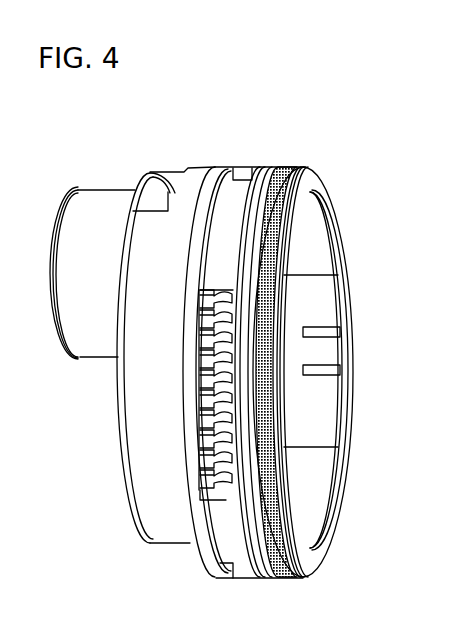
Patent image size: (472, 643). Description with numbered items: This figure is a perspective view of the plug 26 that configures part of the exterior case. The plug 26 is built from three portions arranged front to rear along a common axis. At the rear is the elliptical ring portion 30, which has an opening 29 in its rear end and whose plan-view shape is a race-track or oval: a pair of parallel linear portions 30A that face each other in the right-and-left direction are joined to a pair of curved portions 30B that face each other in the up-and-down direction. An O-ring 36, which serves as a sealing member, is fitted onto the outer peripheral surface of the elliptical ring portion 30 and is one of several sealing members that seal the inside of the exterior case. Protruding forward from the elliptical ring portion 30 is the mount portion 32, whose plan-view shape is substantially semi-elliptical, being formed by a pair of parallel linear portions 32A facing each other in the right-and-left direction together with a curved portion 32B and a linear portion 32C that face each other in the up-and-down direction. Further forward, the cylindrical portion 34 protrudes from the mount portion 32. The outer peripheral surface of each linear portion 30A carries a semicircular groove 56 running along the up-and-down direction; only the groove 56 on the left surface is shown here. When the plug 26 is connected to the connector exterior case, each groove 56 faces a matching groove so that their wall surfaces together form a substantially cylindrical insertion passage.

The plug 26 is at (289, 147).
The opening 29 is at (320, 313).
The elliptical ring portion 30 is at (240, 186).
The linear portion 30A is at (222, 238).
The curved portion 30B is at (306, 168).
The mount portion 32 is at (159, 236).
The linear portion 32A is at (151, 383).
The curved portion 32B is at (199, 170).
The linear portion 32C is at (166, 546).
The cylindrical portion 34 is at (102, 198).
The O-ring 36 is at (293, 168).
The semicircular groove 56 is at (223, 430).